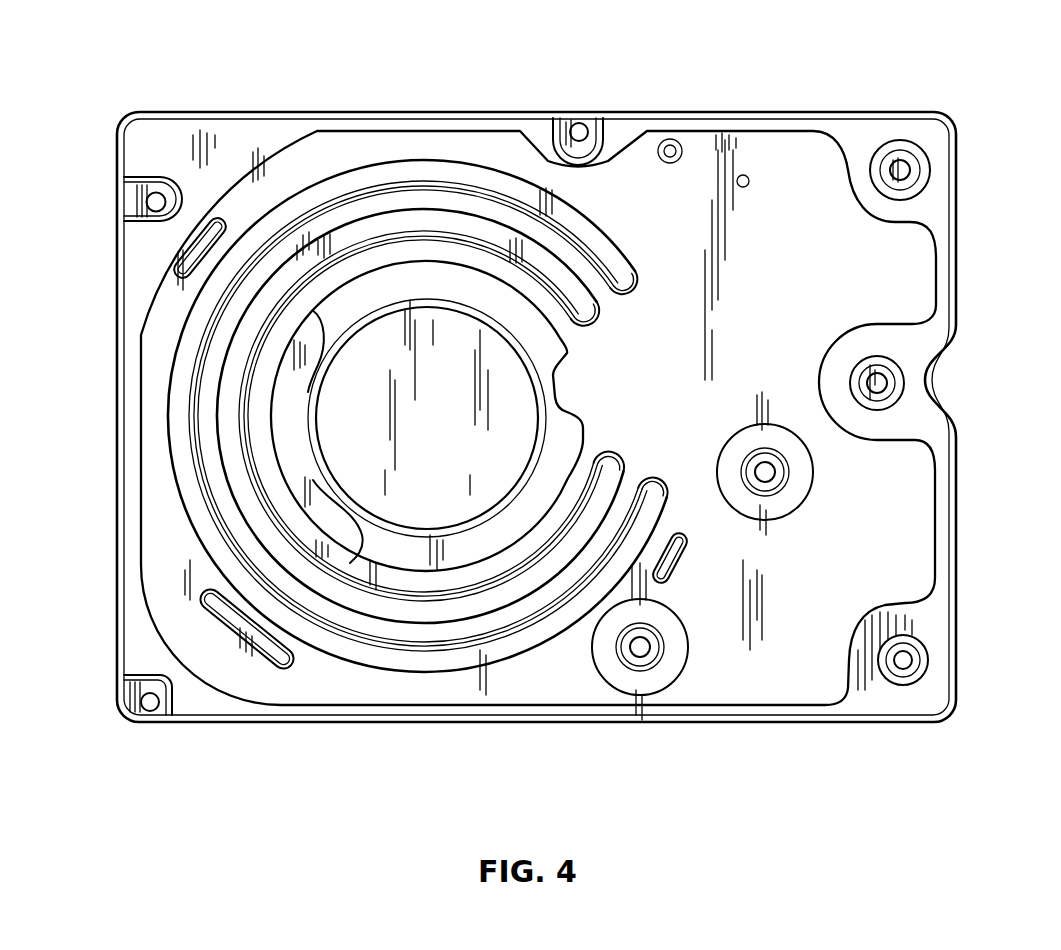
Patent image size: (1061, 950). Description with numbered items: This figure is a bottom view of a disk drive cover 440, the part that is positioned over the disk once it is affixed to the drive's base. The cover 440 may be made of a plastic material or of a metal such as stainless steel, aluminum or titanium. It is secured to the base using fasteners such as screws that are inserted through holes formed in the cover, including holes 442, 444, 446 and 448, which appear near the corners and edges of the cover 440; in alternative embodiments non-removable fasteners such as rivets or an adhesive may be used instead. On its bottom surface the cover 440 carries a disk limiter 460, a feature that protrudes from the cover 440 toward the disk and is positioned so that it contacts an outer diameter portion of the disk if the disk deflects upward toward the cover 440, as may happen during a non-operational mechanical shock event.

The cover 440 is at (784, 103).
The hole 442 is at (910, 170).
The hole 444 is at (583, 123).
The hole 446 is at (148, 201).
The hole 448 is at (148, 708).
The disk limiter 460 is at (684, 552).